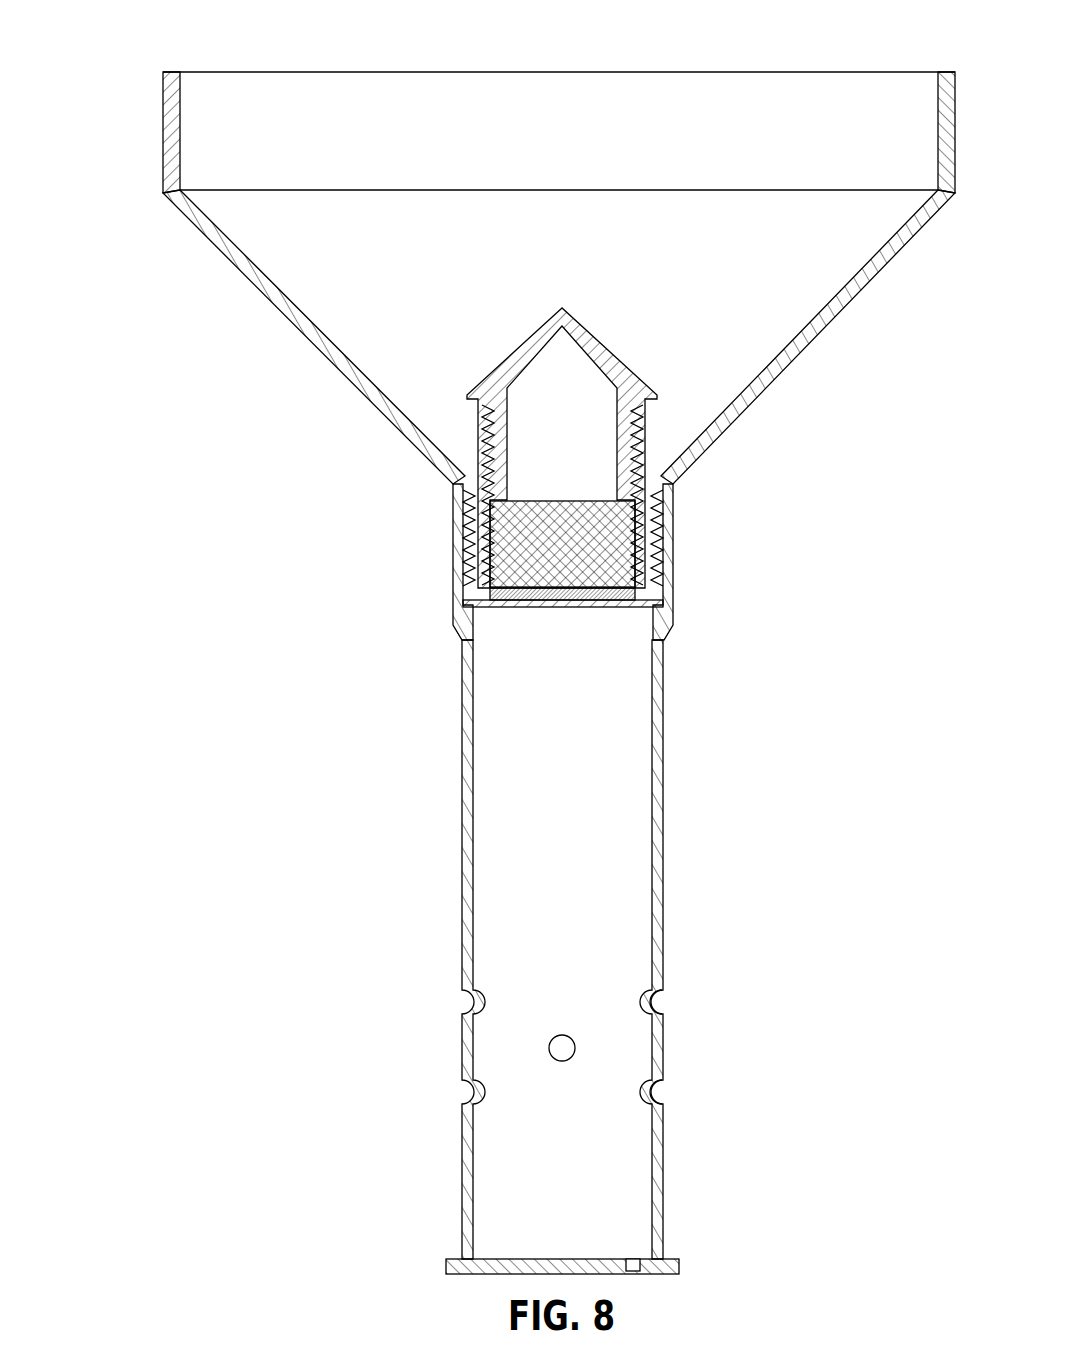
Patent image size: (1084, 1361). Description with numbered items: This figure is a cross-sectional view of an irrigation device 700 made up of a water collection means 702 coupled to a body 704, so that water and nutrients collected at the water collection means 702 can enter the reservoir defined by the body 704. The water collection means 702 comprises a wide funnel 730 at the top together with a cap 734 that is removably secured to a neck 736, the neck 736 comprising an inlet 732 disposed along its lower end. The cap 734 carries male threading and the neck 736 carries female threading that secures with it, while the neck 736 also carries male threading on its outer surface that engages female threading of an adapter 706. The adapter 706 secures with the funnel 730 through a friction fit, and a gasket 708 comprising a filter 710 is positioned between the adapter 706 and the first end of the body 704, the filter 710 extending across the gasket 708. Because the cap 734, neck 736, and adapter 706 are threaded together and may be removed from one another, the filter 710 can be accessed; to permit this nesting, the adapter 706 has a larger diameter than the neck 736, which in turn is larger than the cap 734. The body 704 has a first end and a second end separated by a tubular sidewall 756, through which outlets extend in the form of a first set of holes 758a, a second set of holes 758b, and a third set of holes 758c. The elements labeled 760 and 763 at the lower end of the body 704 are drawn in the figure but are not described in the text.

The irrigation device 700 is at (114, 86).
The water collection means 702 is at (250, 432).
The body 704 is at (430, 867).
The adapter 706 is at (665, 548).
The gasket 708 is at (487, 606).
The filter 710 is at (600, 608).
The funnel 730 is at (397, 149).
The inlet 732 is at (500, 556).
The cap 734 is at (630, 375).
The neck 736 is at (645, 465).
The tubular sidewall 756 is at (655, 858).
The first set of holes 758a is at (675, 1002).
The second set of holes 758b is at (545, 1038).
The third set of holes 758c is at (675, 1093).
The base plate 760 is at (452, 1268).
The notch 763 is at (633, 1245).